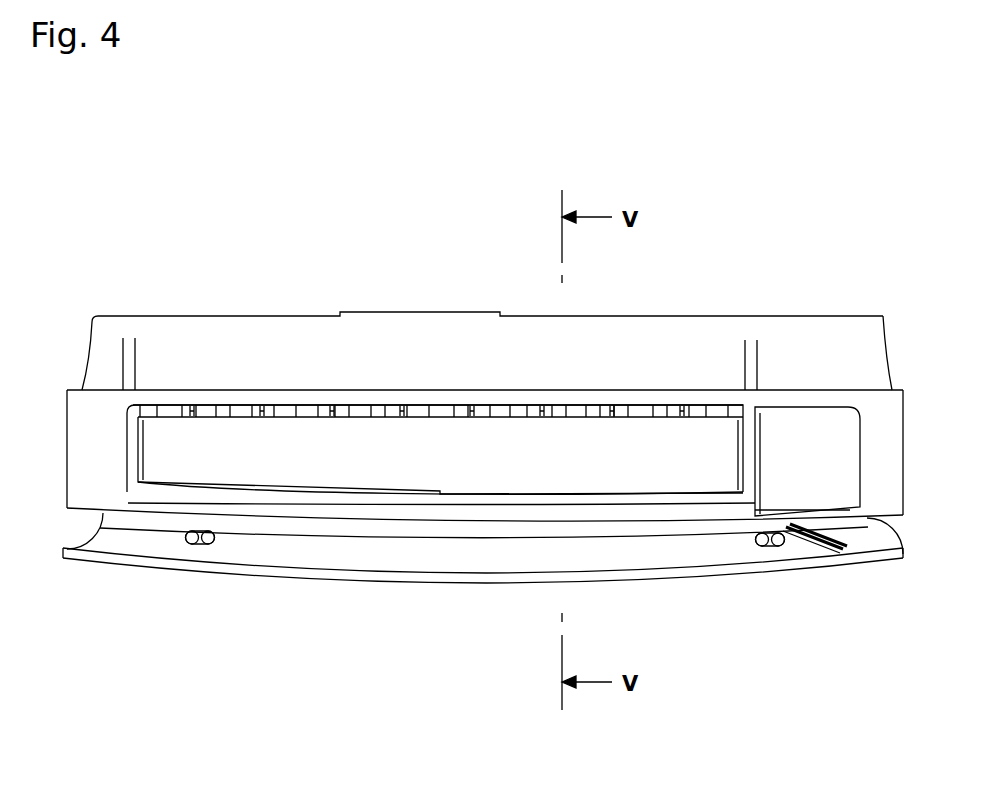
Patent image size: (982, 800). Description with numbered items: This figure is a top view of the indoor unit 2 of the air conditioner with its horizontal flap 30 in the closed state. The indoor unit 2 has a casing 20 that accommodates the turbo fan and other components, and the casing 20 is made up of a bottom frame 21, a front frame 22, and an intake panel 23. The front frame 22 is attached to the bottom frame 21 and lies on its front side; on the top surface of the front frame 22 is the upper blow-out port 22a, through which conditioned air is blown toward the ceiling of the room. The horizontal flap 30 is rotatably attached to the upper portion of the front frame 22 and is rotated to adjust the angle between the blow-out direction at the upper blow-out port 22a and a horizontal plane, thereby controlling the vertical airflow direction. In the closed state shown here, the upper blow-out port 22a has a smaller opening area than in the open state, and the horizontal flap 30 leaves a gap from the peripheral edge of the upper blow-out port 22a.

The indoor unit 2 is at (827, 255).
The casing 20 is at (767, 317).
The bottom frame 21 is at (624, 342).
The front frame 22 is at (461, 398).
The upper blow-out port 22a is at (215, 406).
The intake panel 23 is at (492, 579).
The horizontal flap 30 is at (350, 480).